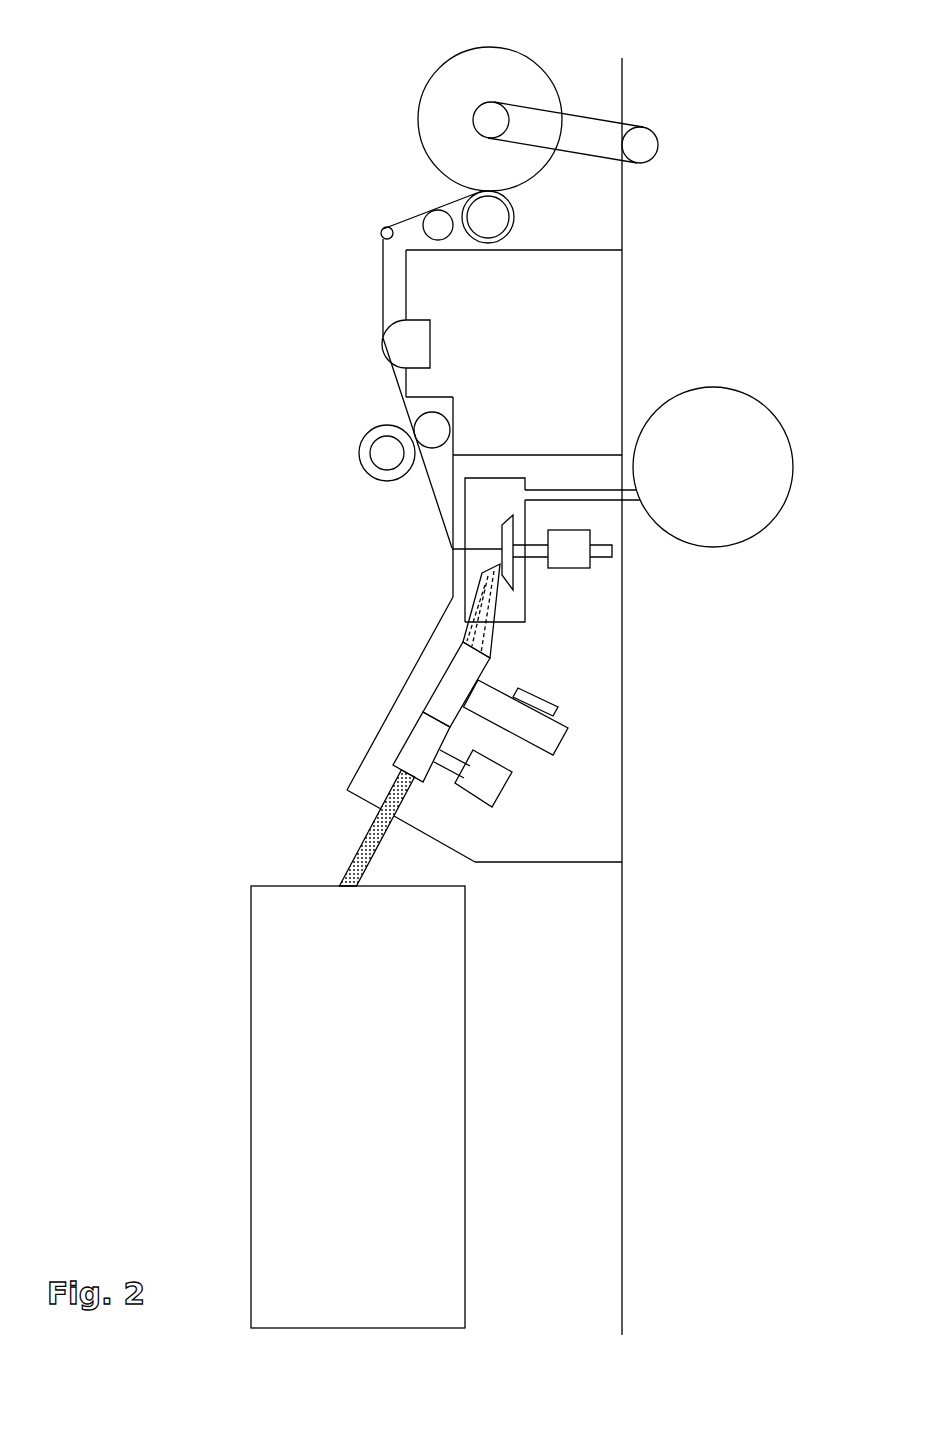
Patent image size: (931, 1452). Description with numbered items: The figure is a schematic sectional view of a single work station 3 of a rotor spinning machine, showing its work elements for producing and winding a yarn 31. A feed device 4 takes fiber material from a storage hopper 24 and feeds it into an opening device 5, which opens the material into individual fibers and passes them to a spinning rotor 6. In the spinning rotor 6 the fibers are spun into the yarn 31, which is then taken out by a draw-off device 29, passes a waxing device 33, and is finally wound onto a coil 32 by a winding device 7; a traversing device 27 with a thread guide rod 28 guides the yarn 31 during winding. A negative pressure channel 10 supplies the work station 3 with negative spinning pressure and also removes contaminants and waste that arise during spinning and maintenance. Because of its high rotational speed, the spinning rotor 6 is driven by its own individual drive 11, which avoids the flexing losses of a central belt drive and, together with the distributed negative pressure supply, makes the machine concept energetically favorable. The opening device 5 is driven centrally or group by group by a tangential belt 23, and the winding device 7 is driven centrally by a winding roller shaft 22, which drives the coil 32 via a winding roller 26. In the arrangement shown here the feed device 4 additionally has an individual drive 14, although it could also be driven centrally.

The work station 3 is at (317, 433).
The feed device 4 is at (418, 750).
The opening device 5 is at (460, 687).
The spinning rotor 6 is at (508, 537).
The winding device 7 is at (468, 160).
The negative pressure channel 10 is at (727, 443).
The individual drive 11 is at (568, 550).
The individual drive 14 is at (490, 782).
The winding roller shaft 22 is at (492, 220).
The tangential belt 23 is at (543, 706).
The storage hopper 24 is at (267, 972).
The winding roller 26 is at (515, 228).
The traversing device 27 is at (417, 198).
The thread guide rod 28 is at (428, 228).
The draw-off device 29 is at (383, 412).
The yarn 31 is at (383, 290).
The coil 32 is at (492, 77).
The waxing device 33 is at (403, 353).